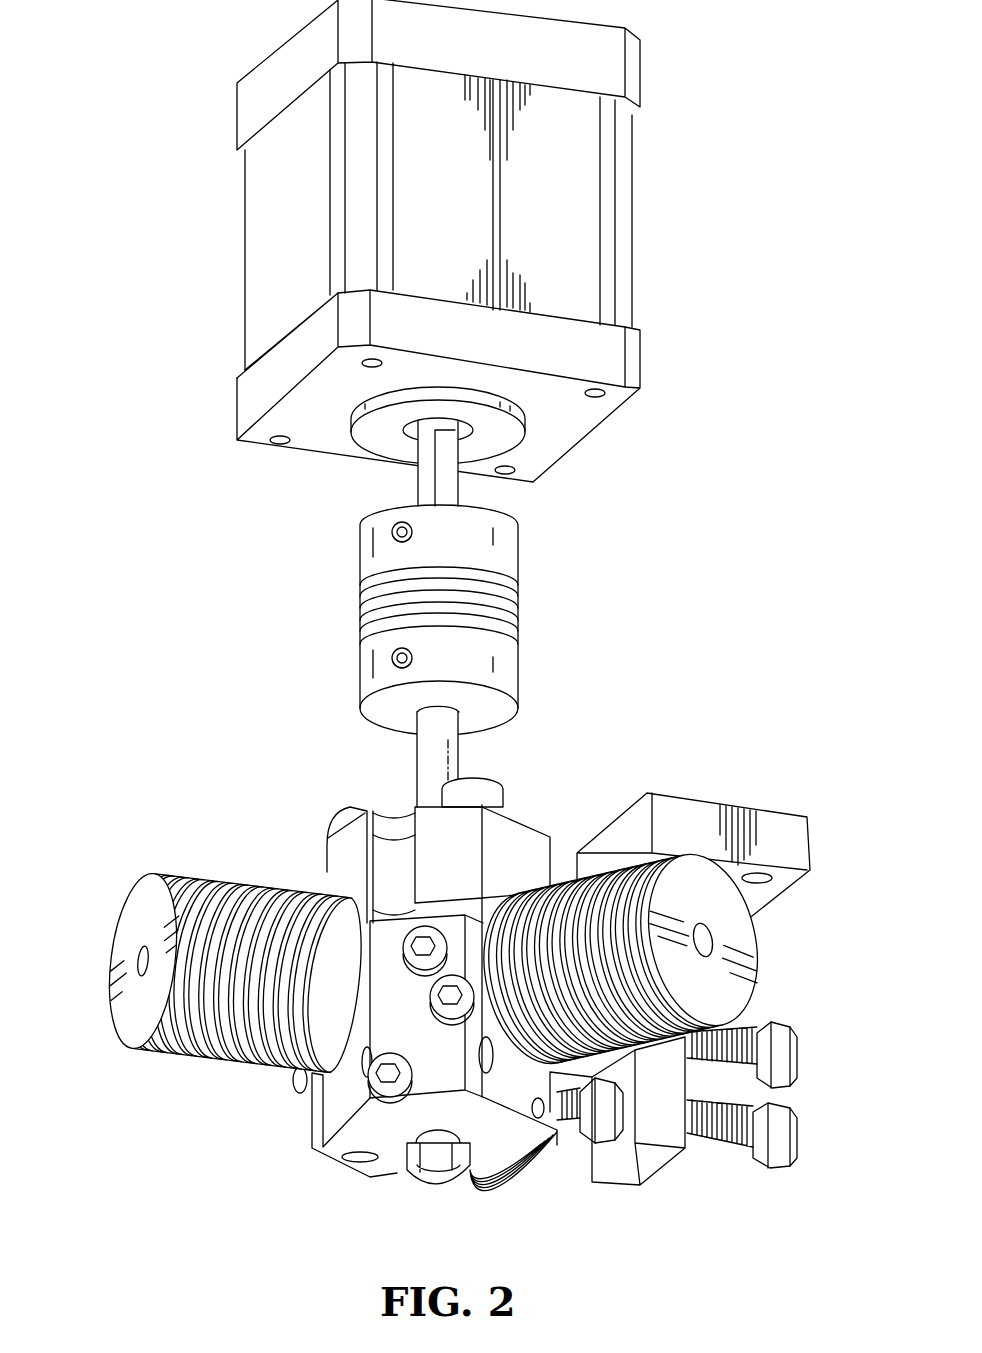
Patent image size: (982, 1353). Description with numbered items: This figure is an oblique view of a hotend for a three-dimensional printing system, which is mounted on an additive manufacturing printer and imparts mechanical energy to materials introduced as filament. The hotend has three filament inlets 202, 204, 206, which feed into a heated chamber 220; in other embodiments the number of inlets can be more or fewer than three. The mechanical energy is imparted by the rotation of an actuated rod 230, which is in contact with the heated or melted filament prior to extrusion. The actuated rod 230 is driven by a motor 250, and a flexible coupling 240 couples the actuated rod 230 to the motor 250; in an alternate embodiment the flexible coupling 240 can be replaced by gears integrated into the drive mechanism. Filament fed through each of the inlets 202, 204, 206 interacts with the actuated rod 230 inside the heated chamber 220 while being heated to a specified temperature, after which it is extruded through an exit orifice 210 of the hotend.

The filament inlet 202 is at (128, 927).
The filament inlet 204 is at (750, 930).
The filament inlet 206 is at (483, 1197).
The exit orifice 210 is at (433, 1178).
The heated chamber 220 is at (333, 1107).
The actuated rod 230 is at (418, 757).
The flexible coupling 240 is at (518, 553).
The motor 250 is at (632, 200).